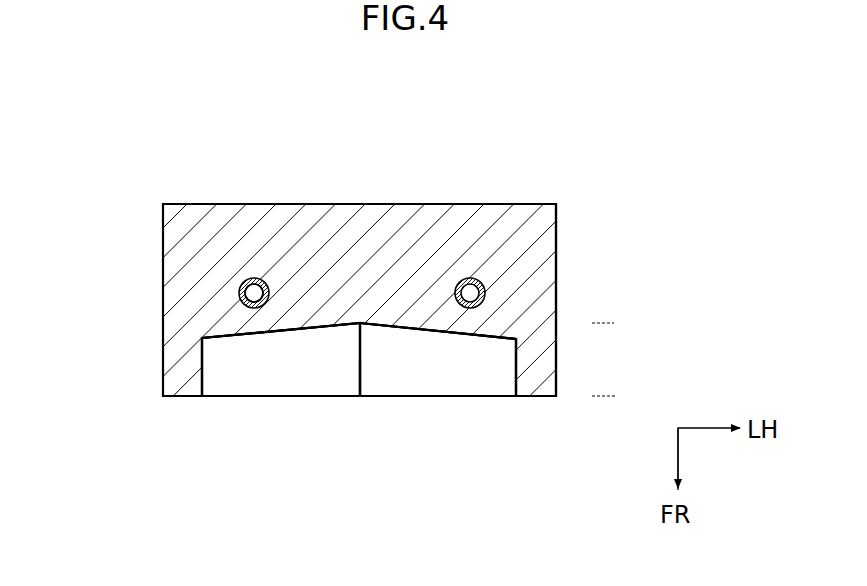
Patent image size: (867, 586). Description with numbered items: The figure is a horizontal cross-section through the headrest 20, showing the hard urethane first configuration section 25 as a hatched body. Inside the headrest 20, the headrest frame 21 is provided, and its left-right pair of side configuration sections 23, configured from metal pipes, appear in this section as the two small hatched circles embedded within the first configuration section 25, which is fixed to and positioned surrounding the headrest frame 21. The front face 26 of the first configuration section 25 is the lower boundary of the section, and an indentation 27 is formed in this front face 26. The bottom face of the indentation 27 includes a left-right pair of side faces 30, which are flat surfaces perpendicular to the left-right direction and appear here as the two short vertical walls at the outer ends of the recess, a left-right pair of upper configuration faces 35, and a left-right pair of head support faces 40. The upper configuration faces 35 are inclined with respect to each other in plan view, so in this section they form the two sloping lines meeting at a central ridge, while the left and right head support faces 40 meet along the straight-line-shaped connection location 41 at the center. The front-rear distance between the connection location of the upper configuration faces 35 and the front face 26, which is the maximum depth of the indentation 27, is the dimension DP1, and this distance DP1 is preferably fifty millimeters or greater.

The headrest 20 is at (128, 293).
The headrest frame 21 is at (243, 281).
The side configuration sections 23 is at (263, 280).
The first configuration section 25 is at (556, 251).
The front face 26 is at (543, 396).
The indentation 27 is at (415, 328).
The side faces 30 is at (203, 366).
The upper configuration faces 35 is at (310, 329).
The head support faces 40 is at (262, 373).
The connection location 41 is at (360, 376).
The distance DP1 is at (603, 324).